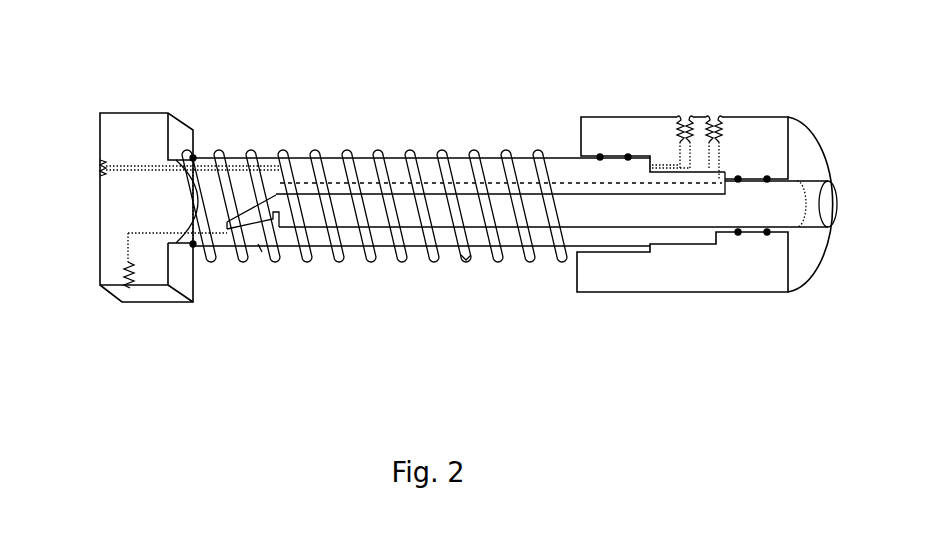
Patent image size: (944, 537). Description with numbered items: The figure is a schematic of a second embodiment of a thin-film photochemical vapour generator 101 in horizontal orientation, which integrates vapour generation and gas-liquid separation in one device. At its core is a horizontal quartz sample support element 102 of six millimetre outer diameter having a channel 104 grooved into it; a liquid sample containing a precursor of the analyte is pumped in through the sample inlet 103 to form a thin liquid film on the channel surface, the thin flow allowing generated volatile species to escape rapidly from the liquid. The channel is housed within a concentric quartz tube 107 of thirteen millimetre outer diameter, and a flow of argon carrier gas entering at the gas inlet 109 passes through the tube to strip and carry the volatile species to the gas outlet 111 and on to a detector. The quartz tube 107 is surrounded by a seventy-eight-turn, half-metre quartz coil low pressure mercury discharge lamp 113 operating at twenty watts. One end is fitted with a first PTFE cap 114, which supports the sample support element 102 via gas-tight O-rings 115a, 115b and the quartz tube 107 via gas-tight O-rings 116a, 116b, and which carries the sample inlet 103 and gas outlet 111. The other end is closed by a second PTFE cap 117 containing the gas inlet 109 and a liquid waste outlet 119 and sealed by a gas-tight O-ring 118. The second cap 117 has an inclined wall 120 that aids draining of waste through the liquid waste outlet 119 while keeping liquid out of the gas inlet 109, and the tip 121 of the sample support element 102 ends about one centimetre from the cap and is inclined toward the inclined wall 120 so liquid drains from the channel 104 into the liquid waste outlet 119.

The thin-film photochemical vapour generator 101 is at (290, 58).
The quartz sample support element 102 is at (837, 238).
The sample inlet 103 is at (718, 119).
The channel 104 is at (597, 186).
The concentric quartz tube 107 is at (396, 152).
The gas inlet 109 is at (98, 166).
The gas outlet 111 is at (683, 119).
The quartz coil low pressure mercury discharge lamp 113 is at (468, 264).
The first PTFE cap 114 is at (610, 273).
The O-ring 115a is at (766, 234).
The O-ring 115b is at (737, 234).
The O-ring 116a is at (629, 154).
The O-ring 116b is at (600, 154).
The second PTFE cap 117 is at (123, 123).
The O-ring 118 is at (194, 157).
The liquid waste outlet 119 is at (130, 290).
The inclined wall 120 is at (260, 250).
The tip 121 is at (273, 190).